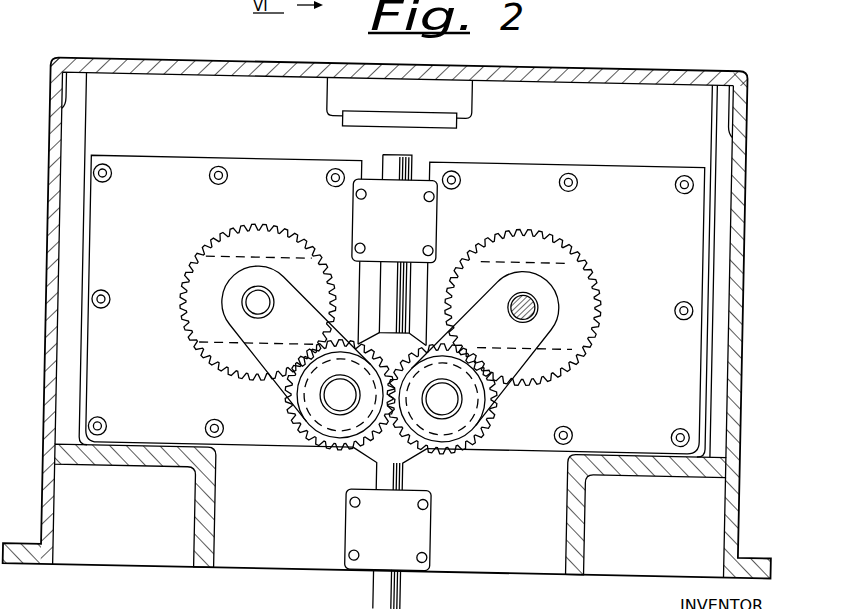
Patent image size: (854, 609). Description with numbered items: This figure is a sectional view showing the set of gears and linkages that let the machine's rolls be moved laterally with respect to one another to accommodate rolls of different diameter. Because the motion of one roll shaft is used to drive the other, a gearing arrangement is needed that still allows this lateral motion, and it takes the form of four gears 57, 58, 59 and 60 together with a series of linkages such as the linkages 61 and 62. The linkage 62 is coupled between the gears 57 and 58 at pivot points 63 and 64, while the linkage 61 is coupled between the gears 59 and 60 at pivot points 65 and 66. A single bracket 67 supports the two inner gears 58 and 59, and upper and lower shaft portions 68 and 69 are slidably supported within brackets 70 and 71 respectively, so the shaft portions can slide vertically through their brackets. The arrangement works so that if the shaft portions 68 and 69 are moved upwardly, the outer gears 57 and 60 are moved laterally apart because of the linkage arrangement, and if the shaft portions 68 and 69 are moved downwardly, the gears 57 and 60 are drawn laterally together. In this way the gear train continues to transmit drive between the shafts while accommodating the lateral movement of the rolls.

The gear 57 is at (577, 307).
The gear 58 is at (472, 437).
The gear 59 is at (318, 433).
The gear 60 is at (263, 247).
The linkage 61 is at (283, 381).
The linkage 62 is at (505, 381).
The pivot point 63 is at (512, 306).
The pivot point 64 is at (449, 400).
The pivot point 65 is at (337, 398).
The pivot point 66 is at (260, 300).
The bracket 67 is at (403, 450).
The upper shaft portion 68 is at (407, 159).
The lower shaft portion 69 is at (394, 597).
The bracket 70 is at (372, 188).
The bracket 71 is at (372, 558).